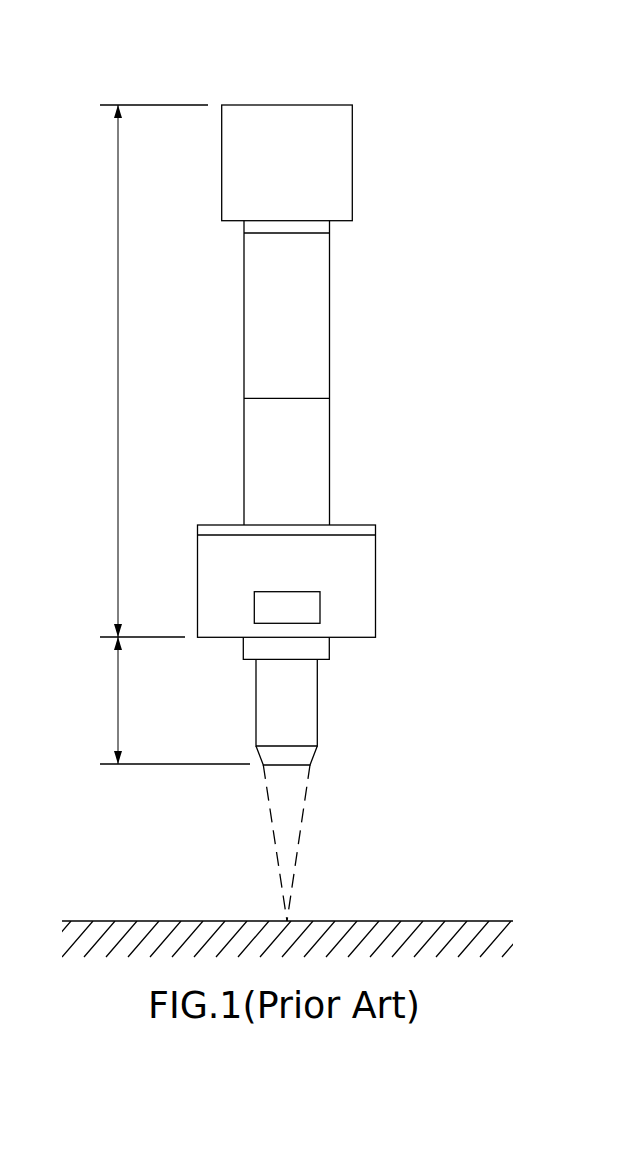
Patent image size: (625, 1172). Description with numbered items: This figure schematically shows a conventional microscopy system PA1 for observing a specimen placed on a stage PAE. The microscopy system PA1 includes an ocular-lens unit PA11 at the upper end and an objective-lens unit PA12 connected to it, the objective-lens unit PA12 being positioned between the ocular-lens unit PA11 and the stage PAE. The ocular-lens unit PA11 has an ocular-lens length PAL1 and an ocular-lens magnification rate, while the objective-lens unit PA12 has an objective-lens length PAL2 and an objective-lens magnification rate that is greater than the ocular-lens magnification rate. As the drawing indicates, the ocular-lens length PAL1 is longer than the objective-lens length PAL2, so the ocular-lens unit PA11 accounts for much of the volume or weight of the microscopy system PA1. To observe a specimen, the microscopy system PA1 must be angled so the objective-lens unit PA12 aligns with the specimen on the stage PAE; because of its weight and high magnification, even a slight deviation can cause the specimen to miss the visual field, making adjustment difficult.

The microscopy system PA1 is at (444, 96).
The ocular-lens unit PA11 is at (363, 570).
The objective-lens unit PA12 is at (313, 710).
The ocular-lens length PAL1 is at (131, 371).
The objective-lens length PAL2 is at (151, 700).
The stage PAE is at (480, 921).